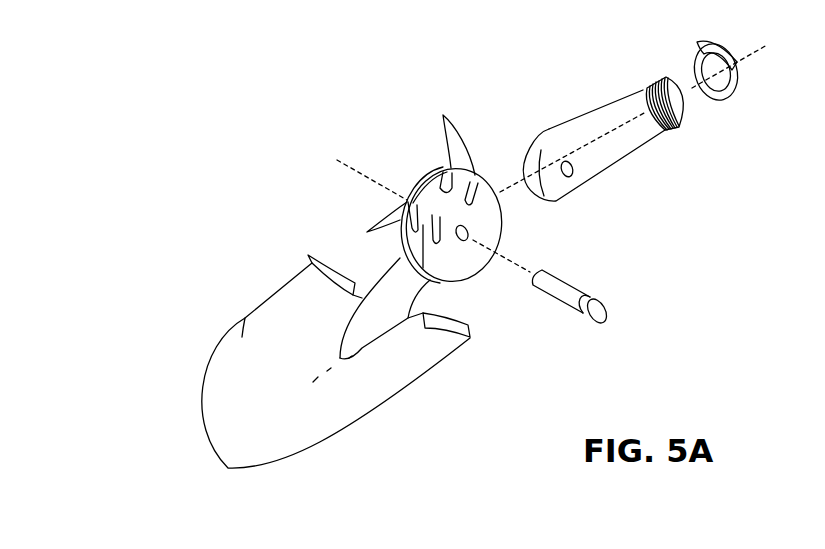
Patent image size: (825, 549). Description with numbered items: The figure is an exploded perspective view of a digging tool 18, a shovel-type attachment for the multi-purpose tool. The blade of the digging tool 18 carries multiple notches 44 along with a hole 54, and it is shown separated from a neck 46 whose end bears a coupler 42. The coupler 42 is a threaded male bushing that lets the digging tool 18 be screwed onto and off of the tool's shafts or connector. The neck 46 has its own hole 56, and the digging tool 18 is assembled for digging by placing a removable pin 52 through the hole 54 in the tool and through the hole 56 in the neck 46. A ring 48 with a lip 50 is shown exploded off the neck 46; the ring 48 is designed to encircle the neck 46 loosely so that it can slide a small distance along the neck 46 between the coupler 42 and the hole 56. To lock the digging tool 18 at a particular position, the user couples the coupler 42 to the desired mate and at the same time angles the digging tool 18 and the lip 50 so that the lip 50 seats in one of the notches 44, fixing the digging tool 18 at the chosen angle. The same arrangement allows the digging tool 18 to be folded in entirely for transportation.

The digging tool 18 is at (243, 318).
The coupler 42 is at (649, 84).
The notches 44 is at (450, 120).
The neck 46 is at (563, 132).
The ring 48 is at (736, 87).
The lip 50 is at (699, 40).
The removable pin 52 is at (605, 315).
The hole 54 is at (468, 233).
The hole 56 is at (571, 171).